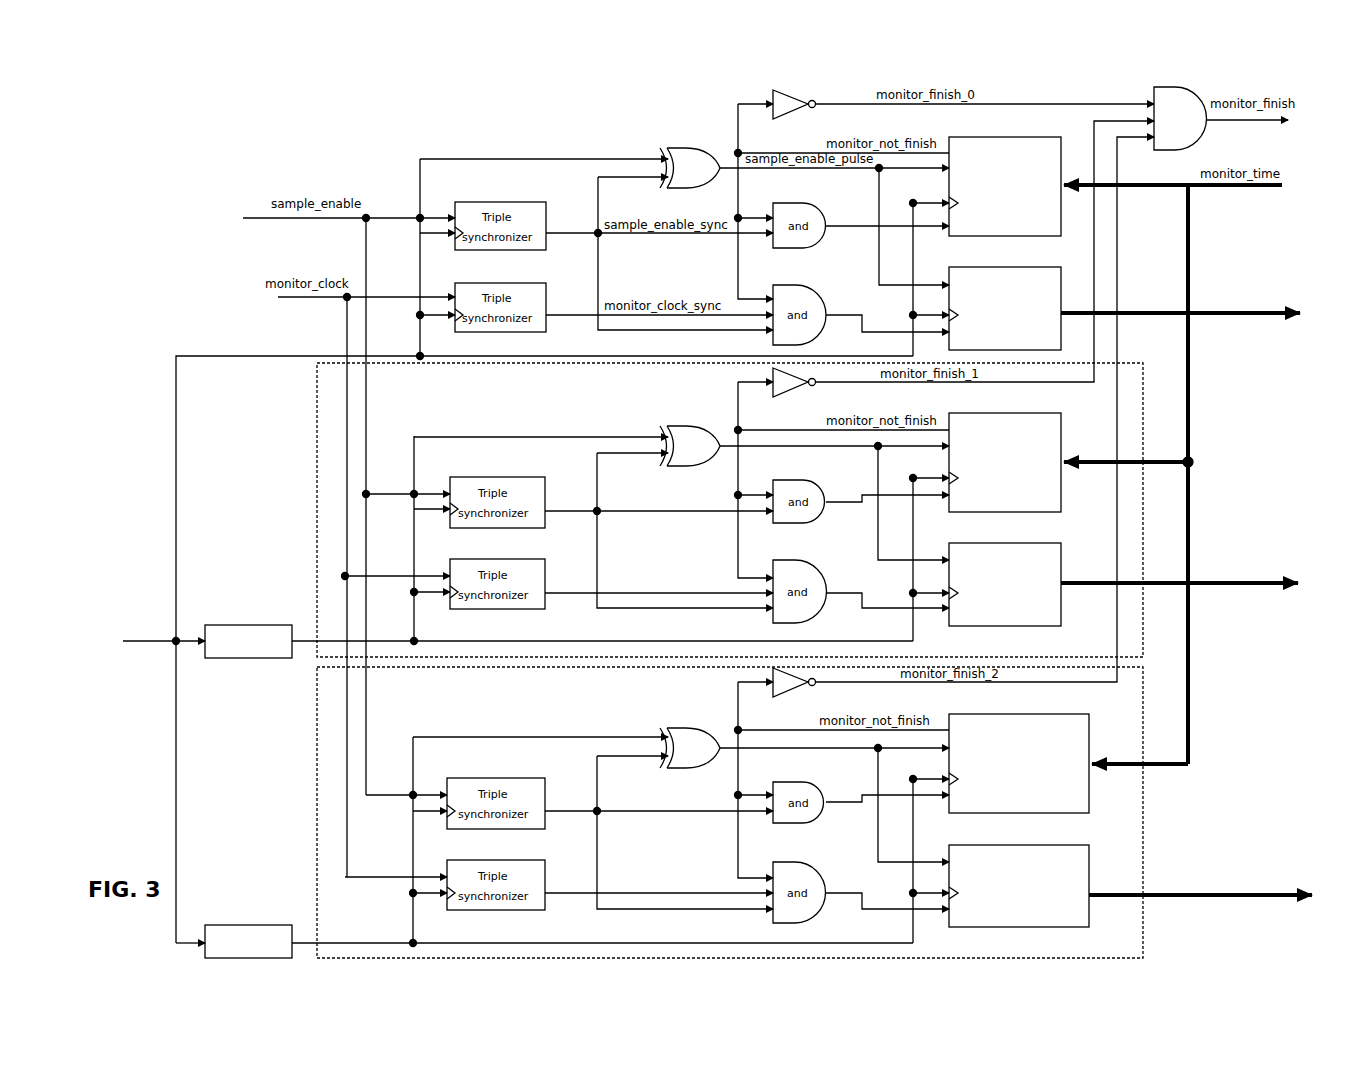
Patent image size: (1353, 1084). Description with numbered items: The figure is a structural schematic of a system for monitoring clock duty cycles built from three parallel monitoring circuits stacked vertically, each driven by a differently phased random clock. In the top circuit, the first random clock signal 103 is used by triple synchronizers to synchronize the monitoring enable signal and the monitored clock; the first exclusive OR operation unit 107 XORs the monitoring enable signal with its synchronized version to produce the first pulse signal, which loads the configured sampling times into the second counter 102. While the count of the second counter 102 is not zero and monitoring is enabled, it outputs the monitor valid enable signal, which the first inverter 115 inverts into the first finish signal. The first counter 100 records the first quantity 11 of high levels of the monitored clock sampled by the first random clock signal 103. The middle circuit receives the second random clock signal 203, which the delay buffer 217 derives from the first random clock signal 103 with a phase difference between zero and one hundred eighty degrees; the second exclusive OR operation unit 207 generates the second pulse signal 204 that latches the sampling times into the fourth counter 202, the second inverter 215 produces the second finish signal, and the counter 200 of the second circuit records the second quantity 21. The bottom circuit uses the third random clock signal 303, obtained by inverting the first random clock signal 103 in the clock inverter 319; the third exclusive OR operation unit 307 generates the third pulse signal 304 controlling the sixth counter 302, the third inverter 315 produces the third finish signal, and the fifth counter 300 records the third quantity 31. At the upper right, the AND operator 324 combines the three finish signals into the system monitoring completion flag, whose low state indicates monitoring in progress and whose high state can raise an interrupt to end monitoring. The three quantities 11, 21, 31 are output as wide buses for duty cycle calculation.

The first random clock signal 103 is at (514, 551).
The first exclusive OR operation unit 107 is at (690, 150).
The first inverter 115 is at (775, 92).
The second counter 102 is at (1005, 186).
The first counter 100 is at (1005, 308).
The first quantity 11 is at (1181, 302).
The delay buffer 217 is at (258, 625).
The second random clock signal 203 is at (602, 540).
The second exclusive OR operation unit 207 is at (690, 428).
The second inverter 215 is at (795, 392).
The second pulse signal 204 is at (757, 446).
The fourth counter 202 is at (1005, 462).
The first counter of the second monitoring circuit 200 is at (1005, 584).
The second quantity 21 is at (1190, 573).
The clock inverter 319 is at (265, 925).
The third random clock signal 303 is at (602, 842).
The third exclusive OR operation unit 307 is at (690, 730).
The third inverter 315 is at (793, 694).
The third pulse signal 304 is at (810, 748).
The sixth counter 302 is at (1019, 763).
The fifth counter 300 is at (1019, 886).
The third quantity 31 is at (1200, 884).
The AND operator 324 is at (1178, 87).